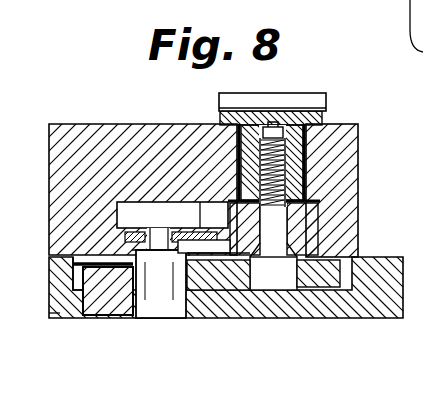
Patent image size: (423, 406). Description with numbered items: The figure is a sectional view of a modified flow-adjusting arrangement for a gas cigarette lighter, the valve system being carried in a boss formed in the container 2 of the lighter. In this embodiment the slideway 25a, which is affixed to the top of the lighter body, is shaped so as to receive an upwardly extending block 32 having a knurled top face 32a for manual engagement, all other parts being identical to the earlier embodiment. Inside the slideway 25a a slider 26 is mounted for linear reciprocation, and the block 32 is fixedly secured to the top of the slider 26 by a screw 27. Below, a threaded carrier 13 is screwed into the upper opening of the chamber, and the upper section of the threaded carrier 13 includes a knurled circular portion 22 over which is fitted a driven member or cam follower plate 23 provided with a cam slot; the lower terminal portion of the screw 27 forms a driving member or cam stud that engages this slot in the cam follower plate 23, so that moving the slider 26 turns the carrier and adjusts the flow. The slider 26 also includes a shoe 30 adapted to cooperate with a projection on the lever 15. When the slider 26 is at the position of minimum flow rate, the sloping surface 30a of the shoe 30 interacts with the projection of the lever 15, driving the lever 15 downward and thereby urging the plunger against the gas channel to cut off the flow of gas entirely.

The container 2 is at (313, 303).
The threaded carrier 13 is at (115, 303).
The lever 15 is at (120, 232).
The knurled circular portion 22 is at (107, 288).
The cam follower plate 23 is at (90, 285).
The slideway 25a is at (106, 136).
The slider 26 is at (307, 233).
The screw 27 is at (278, 173).
The shoe 30 is at (205, 214).
The sloping surface 30a is at (223, 242).
The block 32 is at (250, 140).
The knurled top face 32a is at (305, 100).